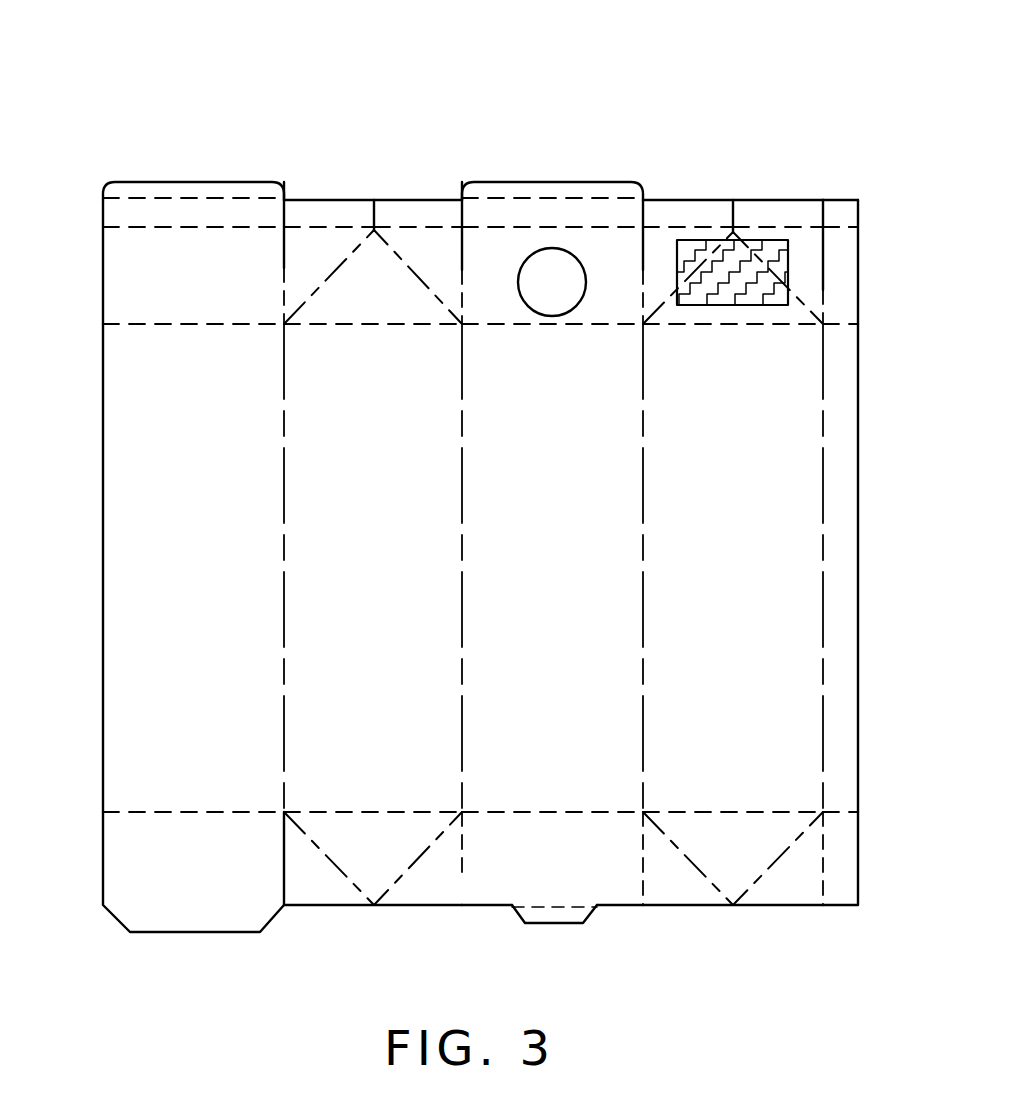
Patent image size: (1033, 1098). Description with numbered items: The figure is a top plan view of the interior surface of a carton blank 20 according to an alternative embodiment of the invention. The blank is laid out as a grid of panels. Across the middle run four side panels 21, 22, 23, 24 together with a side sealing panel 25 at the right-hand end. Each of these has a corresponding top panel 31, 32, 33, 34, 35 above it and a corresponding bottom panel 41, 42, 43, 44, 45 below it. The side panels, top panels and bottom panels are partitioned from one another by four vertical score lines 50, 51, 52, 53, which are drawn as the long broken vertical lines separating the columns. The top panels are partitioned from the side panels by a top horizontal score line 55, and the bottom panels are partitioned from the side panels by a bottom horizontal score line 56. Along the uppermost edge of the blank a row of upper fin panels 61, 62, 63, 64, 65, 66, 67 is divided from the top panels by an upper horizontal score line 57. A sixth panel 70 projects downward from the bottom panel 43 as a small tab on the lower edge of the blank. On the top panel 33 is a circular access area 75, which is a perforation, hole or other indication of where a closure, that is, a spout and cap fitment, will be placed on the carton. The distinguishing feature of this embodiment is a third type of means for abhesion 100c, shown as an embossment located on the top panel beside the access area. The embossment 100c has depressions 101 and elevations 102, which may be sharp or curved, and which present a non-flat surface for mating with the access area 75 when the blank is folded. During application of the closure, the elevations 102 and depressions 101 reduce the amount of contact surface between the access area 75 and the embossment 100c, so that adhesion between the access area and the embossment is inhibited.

The carton blank 20 is at (681, 91).
The side panel 21 is at (193, 568).
The side panel 22 is at (373, 568).
The side panel 23 is at (552, 738).
The side panel 24 is at (733, 568).
The side sealing panel 25 is at (840, 568).
The top panel 31 is at (255, 253).
The top panel 32 is at (373, 253).
The top panel 33 is at (552, 262).
The top panel 34 is at (733, 266).
The top panel 35 is at (840, 262).
The bottom panel 41 is at (193, 872).
The bottom panel 42 is at (373, 858).
The bottom panel 43 is at (552, 858).
The bottom panel 44 is at (733, 858).
The bottom panel 45 is at (840, 858).
The vertical score line 50 is at (284, 452).
The vertical score line 51 is at (462, 452).
The vertical score line 52 is at (643, 456).
The vertical score line 53 is at (823, 458).
The top horizontal score line 55 is at (127, 323).
The bottom horizontal score line 56 is at (806, 812).
The upper horizontal score line 57 is at (127, 227).
The upper fin panel 61 is at (193, 205).
The upper fin panel 62 is at (329, 215).
The upper fin panel 63 is at (418, 214).
The upper fin panel 64 is at (552, 205).
The upper fin panel 65 is at (688, 214).
The upper fin panel 66 is at (778, 216).
The upper fin panel 67 is at (840, 214).
The sixth panel 70 is at (555, 924).
The access area 75 is at (583, 257).
The means for abhesion 100c is at (752, 237).
The depressions 101 is at (707, 305).
The elevations 102 is at (757, 280).